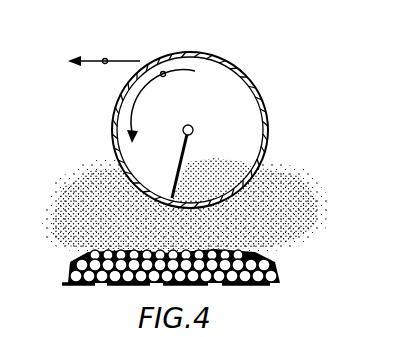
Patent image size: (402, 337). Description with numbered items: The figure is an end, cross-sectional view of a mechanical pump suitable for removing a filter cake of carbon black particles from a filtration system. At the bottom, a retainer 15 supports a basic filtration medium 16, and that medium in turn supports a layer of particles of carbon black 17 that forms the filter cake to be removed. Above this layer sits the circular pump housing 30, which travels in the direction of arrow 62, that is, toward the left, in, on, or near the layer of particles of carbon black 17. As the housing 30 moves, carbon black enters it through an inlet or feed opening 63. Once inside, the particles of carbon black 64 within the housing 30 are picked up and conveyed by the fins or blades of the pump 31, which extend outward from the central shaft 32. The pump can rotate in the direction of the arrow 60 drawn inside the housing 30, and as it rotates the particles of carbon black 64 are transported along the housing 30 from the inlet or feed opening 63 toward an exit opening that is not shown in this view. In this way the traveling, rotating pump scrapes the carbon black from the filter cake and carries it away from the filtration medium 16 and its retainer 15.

The retainer 15 is at (262, 286).
The basic filtration medium 16 is at (274, 278).
The layer of particles of carbon black 17 is at (266, 215).
The pump housing 30 is at (243, 70).
The fins or blades of the pump 31 is at (183, 158).
The shaft 32 is at (193, 127).
The arrow 60 is at (166, 77).
The arrow 62 is at (106, 60).
The inlet or feed opening 63 is at (87, 128).
The particles of carbon black within the housing 64 is at (252, 176).